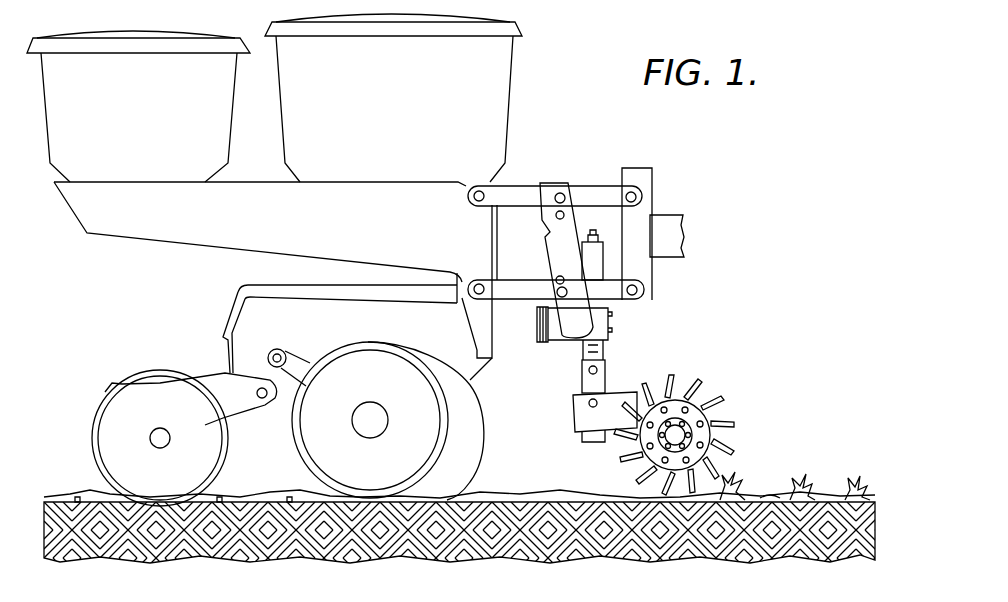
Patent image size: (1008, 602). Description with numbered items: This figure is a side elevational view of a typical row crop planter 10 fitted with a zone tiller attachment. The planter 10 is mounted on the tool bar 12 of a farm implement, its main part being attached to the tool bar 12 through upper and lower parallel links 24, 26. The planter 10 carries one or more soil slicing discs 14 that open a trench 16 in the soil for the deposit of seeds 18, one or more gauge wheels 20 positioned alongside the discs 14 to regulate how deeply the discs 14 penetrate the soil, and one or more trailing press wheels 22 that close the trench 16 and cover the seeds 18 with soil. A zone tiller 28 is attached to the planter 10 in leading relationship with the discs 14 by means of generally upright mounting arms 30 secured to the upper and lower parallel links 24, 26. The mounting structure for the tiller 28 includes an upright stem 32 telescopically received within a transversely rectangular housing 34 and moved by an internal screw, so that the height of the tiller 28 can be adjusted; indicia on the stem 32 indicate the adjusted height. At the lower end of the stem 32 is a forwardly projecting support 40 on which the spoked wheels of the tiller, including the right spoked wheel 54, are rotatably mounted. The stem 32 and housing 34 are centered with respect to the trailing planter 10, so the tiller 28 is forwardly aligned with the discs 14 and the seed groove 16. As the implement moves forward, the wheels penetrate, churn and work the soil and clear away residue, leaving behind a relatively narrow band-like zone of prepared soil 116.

The planter 10 is at (512, 156).
The tool bar 12 is at (668, 232).
The soil slicing discs 14 is at (467, 410).
The trench 16 is at (233, 497).
The seeds 18 is at (290, 500).
The gauge wheels 20 is at (420, 437).
The trailing press wheels 22 is at (122, 425).
The upper parallel links 24 is at (600, 193).
The lower parallel links 26 is at (617, 292).
The zone tiller 28 is at (722, 387).
The mounting arms 30 is at (565, 252).
The stem 32 is at (603, 350).
The housing 34 is at (597, 252).
The support 40 is at (614, 389).
The right spoked wheel 54 is at (726, 450).
The zone of prepared soil 116 is at (567, 495).